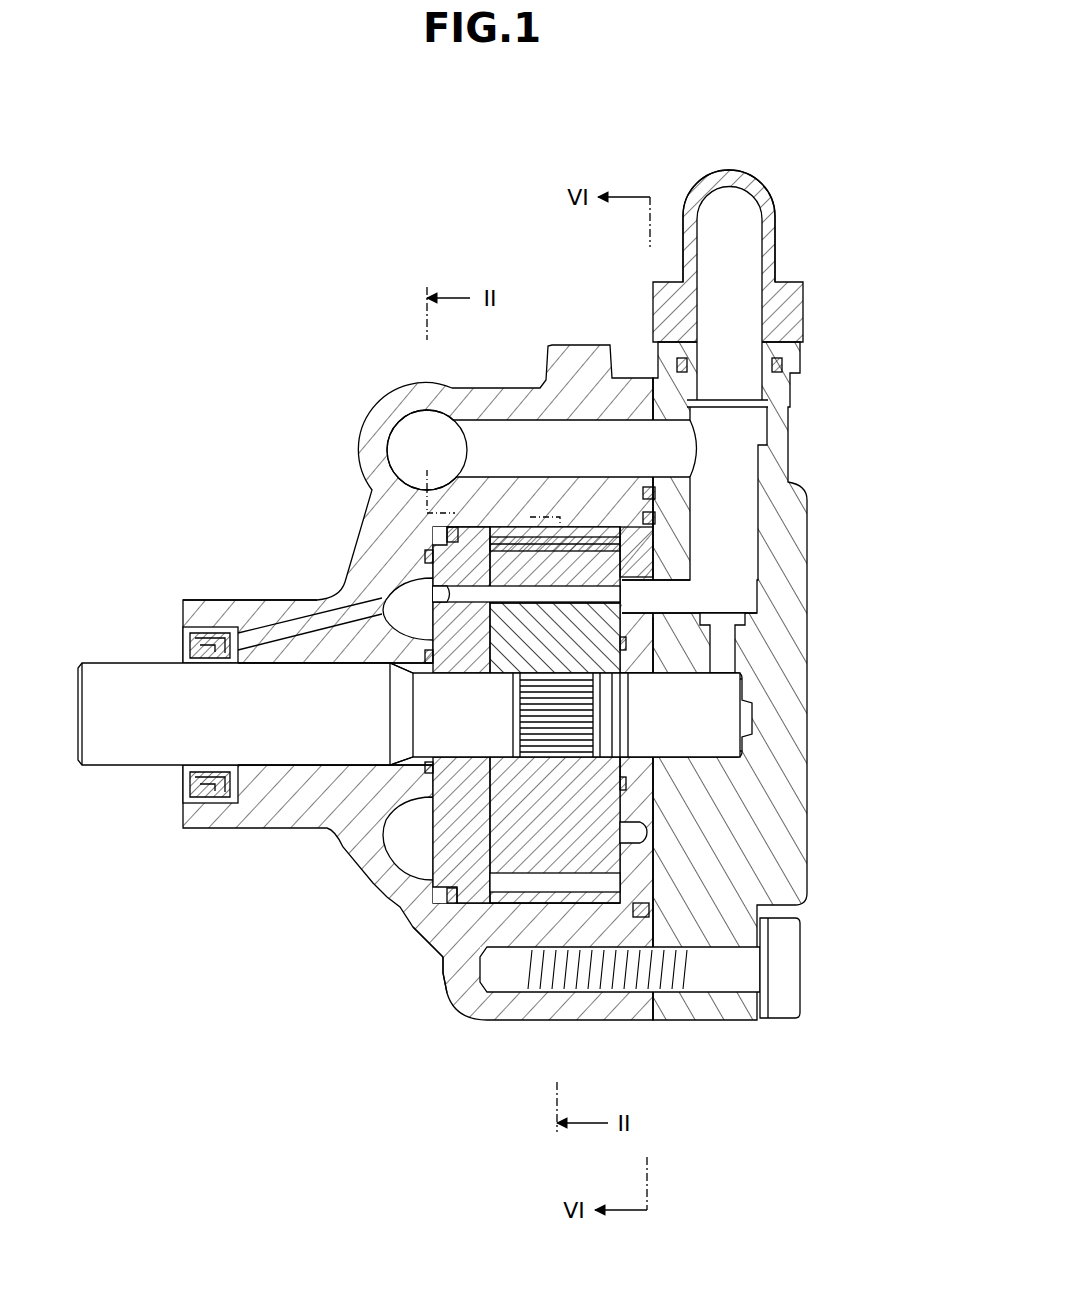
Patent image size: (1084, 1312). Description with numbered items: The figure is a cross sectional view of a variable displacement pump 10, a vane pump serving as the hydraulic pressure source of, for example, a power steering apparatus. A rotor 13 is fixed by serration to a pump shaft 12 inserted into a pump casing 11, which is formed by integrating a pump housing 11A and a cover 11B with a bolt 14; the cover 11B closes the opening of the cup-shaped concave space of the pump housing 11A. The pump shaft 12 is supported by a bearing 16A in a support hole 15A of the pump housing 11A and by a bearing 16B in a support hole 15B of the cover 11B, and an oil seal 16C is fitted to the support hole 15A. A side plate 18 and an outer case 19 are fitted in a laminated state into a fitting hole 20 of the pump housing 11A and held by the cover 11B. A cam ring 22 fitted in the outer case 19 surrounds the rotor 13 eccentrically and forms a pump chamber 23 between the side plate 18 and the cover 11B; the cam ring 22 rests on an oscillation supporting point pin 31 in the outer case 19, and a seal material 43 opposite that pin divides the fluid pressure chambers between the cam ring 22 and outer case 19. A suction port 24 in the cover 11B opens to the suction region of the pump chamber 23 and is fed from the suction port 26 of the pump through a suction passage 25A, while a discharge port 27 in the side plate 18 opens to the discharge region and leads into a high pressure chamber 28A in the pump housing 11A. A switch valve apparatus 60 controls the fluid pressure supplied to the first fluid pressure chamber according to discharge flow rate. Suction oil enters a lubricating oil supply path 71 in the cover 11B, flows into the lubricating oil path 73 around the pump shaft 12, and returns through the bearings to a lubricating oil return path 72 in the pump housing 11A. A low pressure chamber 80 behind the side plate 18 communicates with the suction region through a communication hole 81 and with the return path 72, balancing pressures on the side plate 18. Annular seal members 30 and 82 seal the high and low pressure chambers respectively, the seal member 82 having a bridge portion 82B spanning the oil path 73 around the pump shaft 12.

The variable displacement pump 10 is at (223, 330).
The pump casing 11 is at (208, 600).
The pump housing 11A is at (258, 600).
The cover 11B is at (787, 390).
The pump shaft 12 is at (131, 675).
The rotor 13 is at (612, 800).
The bolt 14 is at (785, 973).
The support hole 15A is at (272, 752).
The support hole 15B is at (742, 735).
The bearing 16A is at (305, 752).
The bearing 16B is at (677, 760).
The oil seal 16C is at (188, 770).
The side plate 18 is at (430, 958).
The outer case 19 is at (576, 900).
The fitting hole 20 is at (578, 540).
The cam ring 22 is at (600, 880).
The pump chamber 23 is at (645, 830).
The suction port 24 is at (717, 595).
The suction passage 25A is at (740, 520).
The suction port 26 is at (737, 215).
The discharge port 27 is at (404, 873).
The high pressure chamber 28A is at (378, 888).
The annular seal member 30 is at (425, 548).
The oscillation supporting point pin 31 is at (630, 917).
The seal material 43 is at (500, 545).
The switch valve apparatus 60 is at (382, 423).
The lubricating oil supply path 71 is at (723, 650).
The lubricating oil return path 72 is at (263, 637).
The lubricating oil path 73 is at (462, 675).
The low pressure chamber 80 is at (403, 600).
The communication hole 81 is at (468, 590).
The annular seal member 82 is at (430, 560).
The bridge portion 82B is at (403, 678).